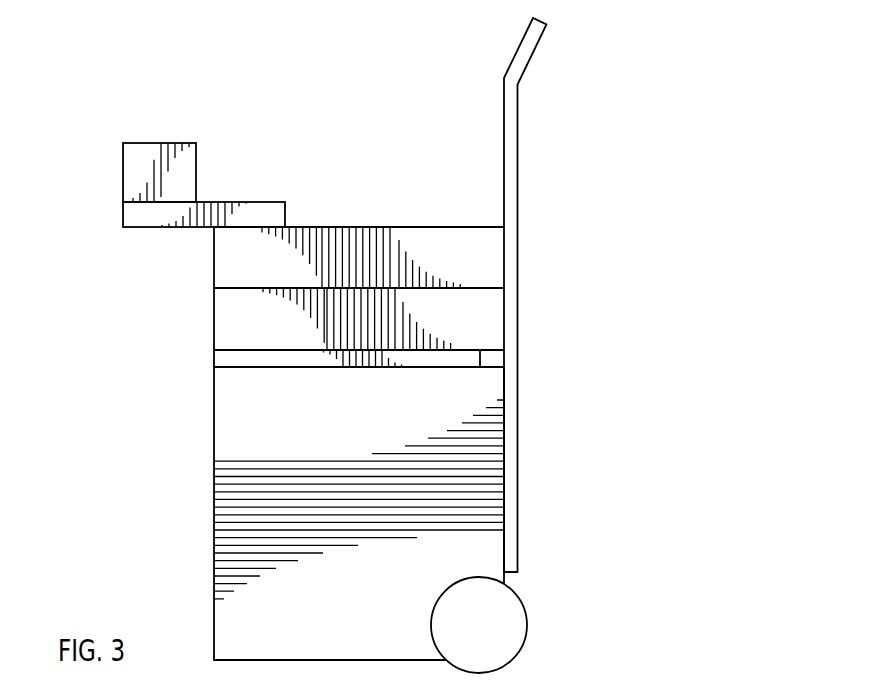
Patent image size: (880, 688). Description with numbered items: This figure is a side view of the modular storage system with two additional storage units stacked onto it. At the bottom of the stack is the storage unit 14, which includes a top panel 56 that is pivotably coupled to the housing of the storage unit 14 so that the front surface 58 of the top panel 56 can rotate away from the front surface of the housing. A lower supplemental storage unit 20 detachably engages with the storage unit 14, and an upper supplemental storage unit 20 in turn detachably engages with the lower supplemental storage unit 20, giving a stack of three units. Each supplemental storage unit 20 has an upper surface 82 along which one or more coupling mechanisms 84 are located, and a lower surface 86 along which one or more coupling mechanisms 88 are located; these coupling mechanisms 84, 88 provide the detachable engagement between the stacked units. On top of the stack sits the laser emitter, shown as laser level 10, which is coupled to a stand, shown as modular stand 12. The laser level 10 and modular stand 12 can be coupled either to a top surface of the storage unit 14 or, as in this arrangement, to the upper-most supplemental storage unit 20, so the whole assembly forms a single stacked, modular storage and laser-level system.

The laser level 10 is at (120, 160).
The modular stand 12 is at (120, 217).
The storage unit 14 is at (210, 470).
The supplemental storage unit 20 is at (302, 282).
The top panel 56 is at (492, 357).
The front surface 58 is at (208, 358).
The upper surface 82 is at (350, 222).
The coupling mechanism 84 is at (438, 220).
The lower surface 86 is at (253, 297).
The coupling mechanism 88 is at (387, 297).